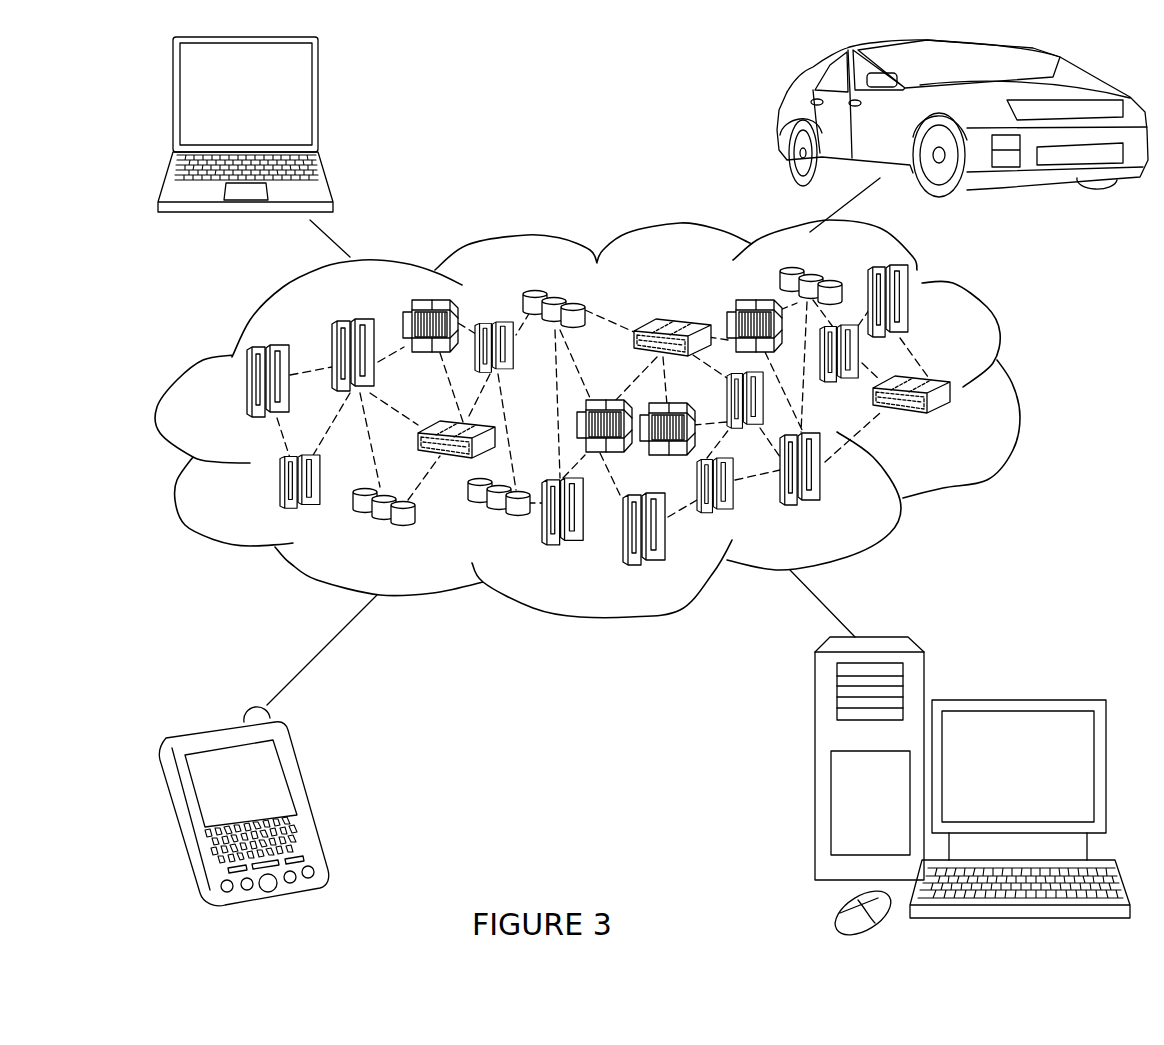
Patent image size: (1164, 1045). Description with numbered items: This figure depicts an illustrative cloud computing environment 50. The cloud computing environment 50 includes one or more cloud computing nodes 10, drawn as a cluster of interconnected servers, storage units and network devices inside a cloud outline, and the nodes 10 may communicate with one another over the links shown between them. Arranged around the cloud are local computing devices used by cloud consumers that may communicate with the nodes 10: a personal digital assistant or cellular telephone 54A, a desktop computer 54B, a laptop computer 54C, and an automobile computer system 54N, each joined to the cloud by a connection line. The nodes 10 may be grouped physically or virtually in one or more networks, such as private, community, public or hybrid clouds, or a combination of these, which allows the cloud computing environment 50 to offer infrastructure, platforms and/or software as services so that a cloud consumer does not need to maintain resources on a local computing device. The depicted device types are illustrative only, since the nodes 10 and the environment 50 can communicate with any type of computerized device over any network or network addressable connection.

The cloud computing nodes 10 is at (955, 425).
The cloud computing environment 50 is at (1013, 390).
The personal digital assistant or cellular telephone 54A is at (310, 797).
The desktop computer 54B is at (1016, 700).
The laptop computer 54C is at (319, 103).
The automobile computer system 54N is at (783, 120).